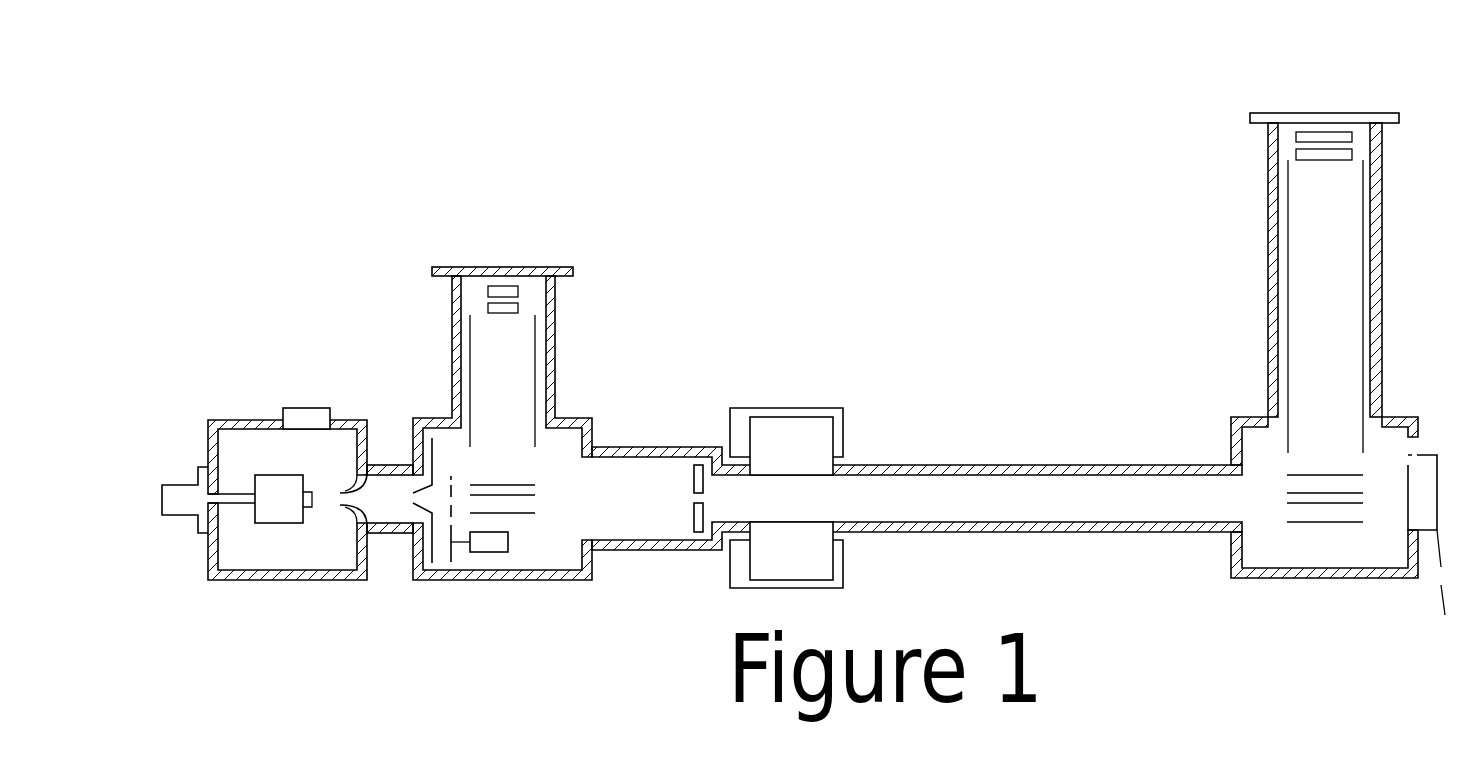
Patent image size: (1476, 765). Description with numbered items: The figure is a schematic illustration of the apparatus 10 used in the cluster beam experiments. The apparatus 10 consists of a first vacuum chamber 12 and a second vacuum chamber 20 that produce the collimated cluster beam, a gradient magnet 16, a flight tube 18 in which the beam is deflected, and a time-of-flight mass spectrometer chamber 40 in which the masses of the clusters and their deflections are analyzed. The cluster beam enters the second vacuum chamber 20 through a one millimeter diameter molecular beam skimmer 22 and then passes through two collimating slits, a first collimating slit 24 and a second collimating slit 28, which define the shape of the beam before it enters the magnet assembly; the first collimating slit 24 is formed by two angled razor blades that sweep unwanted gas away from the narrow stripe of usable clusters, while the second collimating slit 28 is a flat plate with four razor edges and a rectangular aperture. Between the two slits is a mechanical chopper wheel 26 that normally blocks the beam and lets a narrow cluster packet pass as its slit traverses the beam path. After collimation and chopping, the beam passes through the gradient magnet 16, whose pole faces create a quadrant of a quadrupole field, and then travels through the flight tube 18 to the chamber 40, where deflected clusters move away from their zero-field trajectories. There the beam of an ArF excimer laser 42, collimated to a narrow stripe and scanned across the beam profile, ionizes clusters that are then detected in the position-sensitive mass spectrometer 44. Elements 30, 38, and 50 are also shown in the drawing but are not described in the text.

The apparatus 10 is at (690, 313).
The first vacuum chamber 12 is at (247, 552).
The gradient magnet 16 is at (303, 408).
The flight tube 18 is at (1009, 502).
The second vacuum chamber 20 is at (563, 455).
The molecular beam skimmer 22 is at (347, 505).
The first collimating slit 24 is at (432, 457).
The mechanical chopper wheel 26 is at (449, 540).
The second collimating slit 28 is at (690, 513).
The pump housing 30 is at (815, 585).
The detector chamber 38 is at (1260, 468).
The time-of-flight mass spectrometer chamber 40 is at (1287, 275).
The ArF excimer laser 42 is at (1445, 615).
The mass-spectrometer 44 is at (1288, 113).
The sample electrode 50 is at (274, 475).